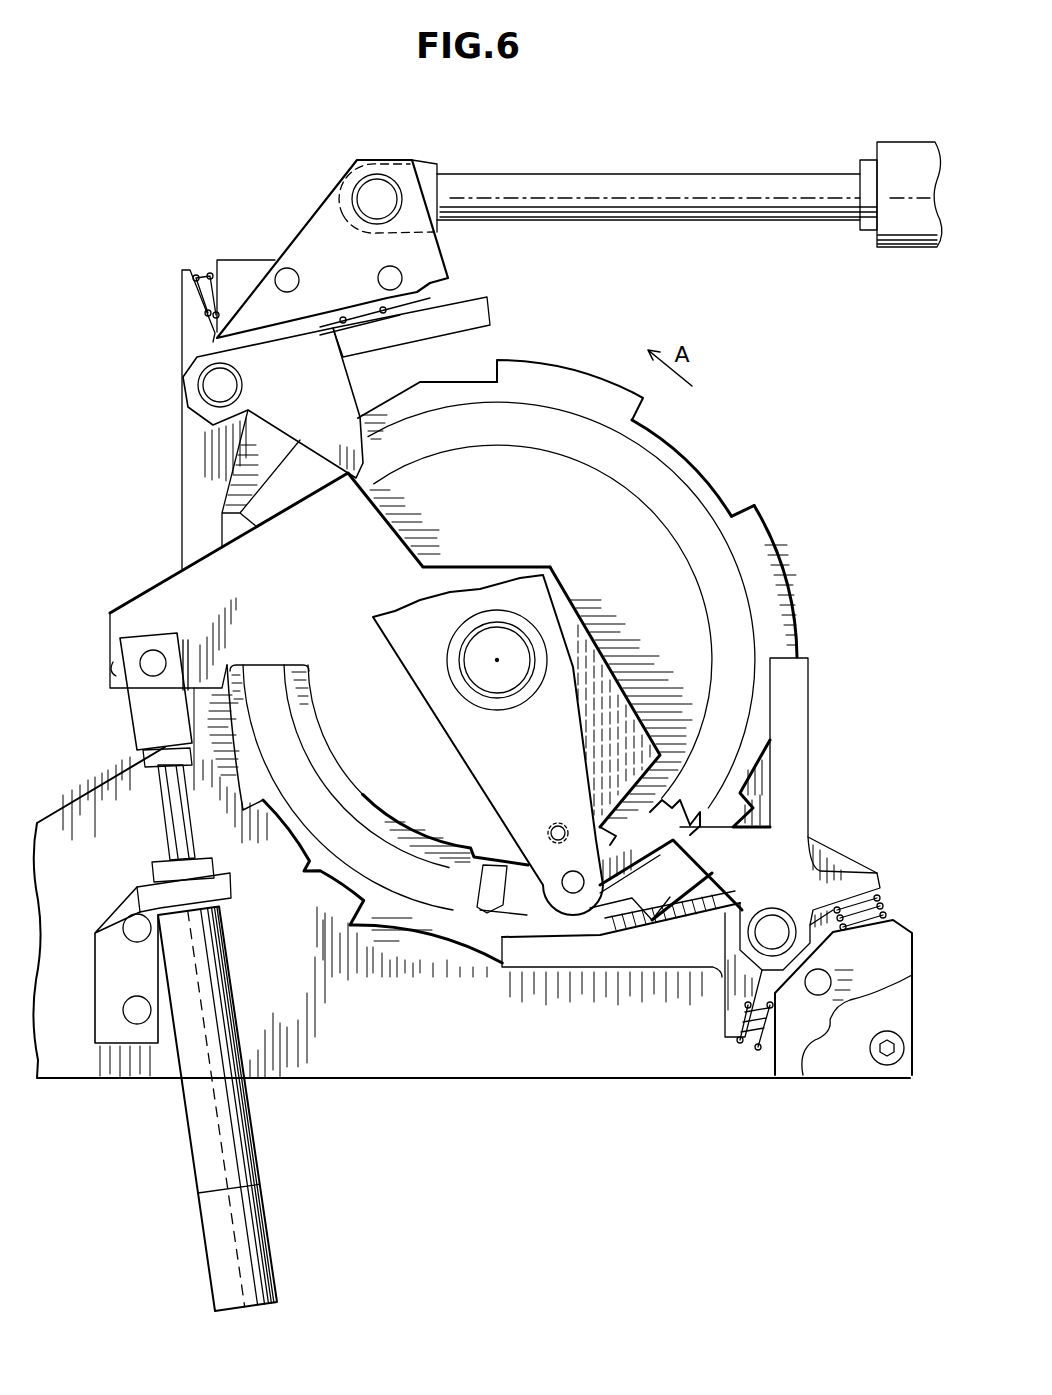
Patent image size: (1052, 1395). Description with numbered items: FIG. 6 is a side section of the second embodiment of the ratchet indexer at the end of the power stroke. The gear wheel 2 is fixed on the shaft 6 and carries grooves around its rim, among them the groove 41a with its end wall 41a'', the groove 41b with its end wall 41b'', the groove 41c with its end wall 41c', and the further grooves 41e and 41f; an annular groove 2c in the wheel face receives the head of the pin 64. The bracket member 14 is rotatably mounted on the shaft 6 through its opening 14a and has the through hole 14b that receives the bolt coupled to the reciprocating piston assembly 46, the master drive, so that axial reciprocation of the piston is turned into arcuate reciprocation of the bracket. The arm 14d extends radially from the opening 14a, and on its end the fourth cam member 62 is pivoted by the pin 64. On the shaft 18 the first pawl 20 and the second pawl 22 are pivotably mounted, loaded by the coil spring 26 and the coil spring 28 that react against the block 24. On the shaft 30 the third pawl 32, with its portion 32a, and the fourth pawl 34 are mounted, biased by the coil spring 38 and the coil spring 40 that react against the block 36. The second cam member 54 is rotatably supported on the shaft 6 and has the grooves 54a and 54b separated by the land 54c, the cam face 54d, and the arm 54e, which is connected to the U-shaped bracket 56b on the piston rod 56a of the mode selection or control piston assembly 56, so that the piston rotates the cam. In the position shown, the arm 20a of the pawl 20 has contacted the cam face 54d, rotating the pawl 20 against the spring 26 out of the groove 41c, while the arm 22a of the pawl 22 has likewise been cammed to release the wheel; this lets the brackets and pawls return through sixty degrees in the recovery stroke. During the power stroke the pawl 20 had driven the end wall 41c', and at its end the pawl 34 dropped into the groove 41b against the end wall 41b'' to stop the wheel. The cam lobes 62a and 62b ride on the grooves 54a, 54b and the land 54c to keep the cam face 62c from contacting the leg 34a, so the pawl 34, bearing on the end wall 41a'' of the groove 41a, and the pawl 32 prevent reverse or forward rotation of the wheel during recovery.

The gear wheel 2 is at (703, 490).
The annular groove 2c is at (732, 580).
The shaft 6 is at (508, 642).
The bracket member 14 is at (427, 260).
The opening 14a is at (545, 665).
The through hole 14b is at (380, 178).
The arm 14d is at (527, 812).
The shaft 18 is at (210, 385).
The first pawl 20 is at (470, 322).
The arm 20a is at (325, 407).
The second pawl 22 is at (195, 505).
The arm 22a is at (248, 487).
The block 24 is at (241, 258).
The coil spring 26 is at (405, 302).
The coil spring 28 is at (200, 272).
The shaft 30 is at (783, 932).
The third pawl 32 is at (577, 957).
The tab of lever 32a is at (697, 953).
The fourth pawl 34 is at (805, 730).
The leg 34a is at (713, 840).
The block 36 is at (807, 1040).
The coil spring 38 is at (757, 1053).
The coil spring 40 is at (887, 918).
The groove 41a is at (791, 782).
The end wall 41a'' is at (802, 586).
The groove 41b is at (693, 468).
The end wall 41b'' is at (665, 406).
The groove 41c is at (427, 415).
The end wall 41c' is at (558, 397).
The ratchet tooth 41e is at (313, 872).
The ratchet tooth 41f is at (633, 937).
The reciprocating piston assembly 46 is at (919, 258).
The second cam member 54 is at (390, 783).
The groove 54a is at (432, 845).
The groove 54b is at (680, 775).
The land 54c is at (475, 877).
The cam face 54d is at (387, 503).
The arm 54e is at (172, 603).
The mode selection or control piston assembly 56 is at (190, 1142).
The piston rod 56a is at (175, 807).
The U-shaped bracket 56b is at (148, 713).
The fourth cam member 62 is at (635, 847).
The cam lobe 62a is at (497, 917).
The cam lobe 62b is at (608, 800).
The cam face 62c is at (675, 803).
The pin 64 is at (573, 897).